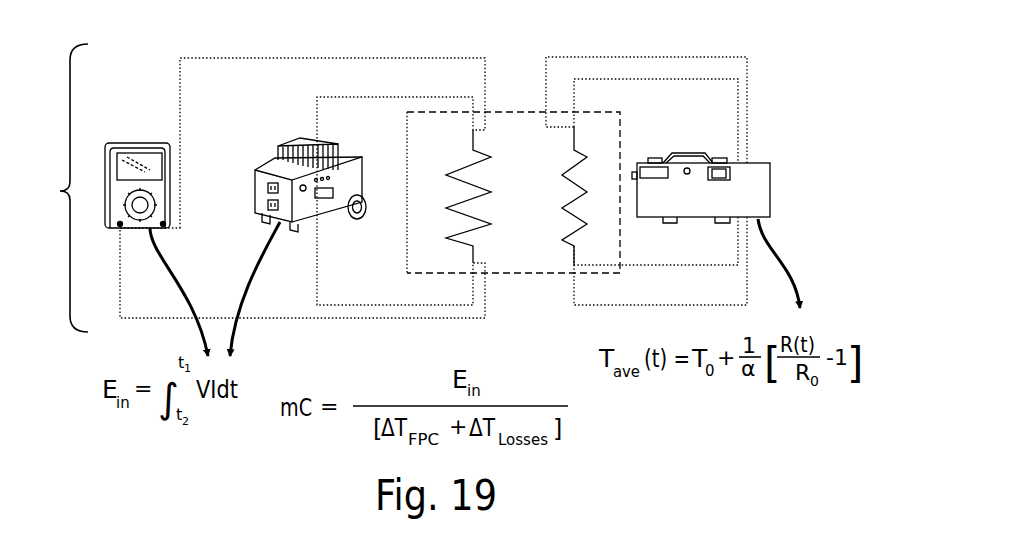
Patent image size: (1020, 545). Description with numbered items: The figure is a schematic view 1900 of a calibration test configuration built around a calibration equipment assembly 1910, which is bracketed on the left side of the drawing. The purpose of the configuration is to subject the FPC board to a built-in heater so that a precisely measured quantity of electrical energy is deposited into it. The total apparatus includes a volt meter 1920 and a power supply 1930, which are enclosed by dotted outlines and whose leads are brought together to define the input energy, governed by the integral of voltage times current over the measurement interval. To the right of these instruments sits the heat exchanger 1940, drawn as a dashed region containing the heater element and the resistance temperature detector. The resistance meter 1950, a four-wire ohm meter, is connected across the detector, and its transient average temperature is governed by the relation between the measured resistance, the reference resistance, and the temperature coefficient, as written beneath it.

The schematic view 1900 is at (803, 57).
The calibration equipment assembly 1910 is at (46, 188).
The volt meter 1920 is at (142, 142).
The power supply 1930 is at (293, 147).
The heat exchanger 1940 is at (552, 262).
The resistance meter 1950 is at (642, 157).